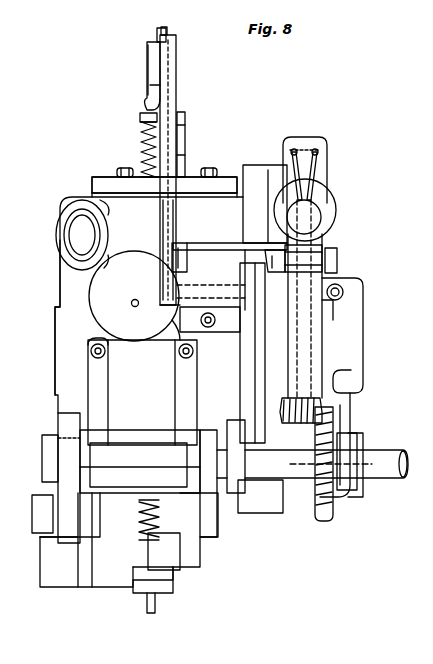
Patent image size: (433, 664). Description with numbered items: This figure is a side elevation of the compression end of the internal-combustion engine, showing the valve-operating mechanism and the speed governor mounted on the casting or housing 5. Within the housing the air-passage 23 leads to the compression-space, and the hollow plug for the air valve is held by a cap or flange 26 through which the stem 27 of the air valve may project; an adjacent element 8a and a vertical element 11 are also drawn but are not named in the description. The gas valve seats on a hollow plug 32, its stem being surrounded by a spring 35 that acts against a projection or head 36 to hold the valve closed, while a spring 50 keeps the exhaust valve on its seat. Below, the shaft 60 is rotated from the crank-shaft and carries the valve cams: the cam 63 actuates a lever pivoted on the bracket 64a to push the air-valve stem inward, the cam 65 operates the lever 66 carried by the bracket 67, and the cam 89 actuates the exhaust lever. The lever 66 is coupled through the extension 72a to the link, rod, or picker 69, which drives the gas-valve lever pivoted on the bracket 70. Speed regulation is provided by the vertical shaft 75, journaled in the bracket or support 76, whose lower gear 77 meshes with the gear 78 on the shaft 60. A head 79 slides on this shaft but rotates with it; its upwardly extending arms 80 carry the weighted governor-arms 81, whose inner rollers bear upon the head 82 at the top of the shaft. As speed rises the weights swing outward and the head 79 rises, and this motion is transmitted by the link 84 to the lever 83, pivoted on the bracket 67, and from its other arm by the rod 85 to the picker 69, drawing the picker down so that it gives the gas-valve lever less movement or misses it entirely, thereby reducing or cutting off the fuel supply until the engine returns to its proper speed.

The casting or housing 5 is at (149, 295).
The bearing boss 8a is at (70, 232).
The vertical rod 11 is at (165, 232).
The air-passage 23 is at (55, 307).
The cap or flange 26 is at (134, 296).
The stem 27 is at (134, 306).
The hollow plug 32 is at (224, 183).
The spring 35 is at (142, 143).
The projection or head 36 is at (140, 117).
The spring 50 is at (129, 553).
The shaft 60 is at (390, 452).
The cam 63 is at (210, 428).
The bracket 64a is at (140, 415).
The cam 65 is at (235, 495).
The lever 66 is at (252, 349).
The bracket 67 is at (229, 237).
The link, rod, or picker 69 is at (157, 40).
The bracket 70 is at (189, 148).
The extension 72a is at (147, 72).
The vertical shaft 75 is at (312, 358).
The bracket or support 76 is at (342, 335).
The gear 77 is at (301, 419).
The gear 78 is at (318, 507).
The head 79 is at (336, 212).
The arms 80 is at (328, 165).
The governor-arms 81 is at (308, 165).
The head 82 is at (290, 150).
The lever 83 is at (278, 273).
The link 84 is at (285, 246).
The rod 85 is at (178, 70).
The cam 89 is at (65, 458).